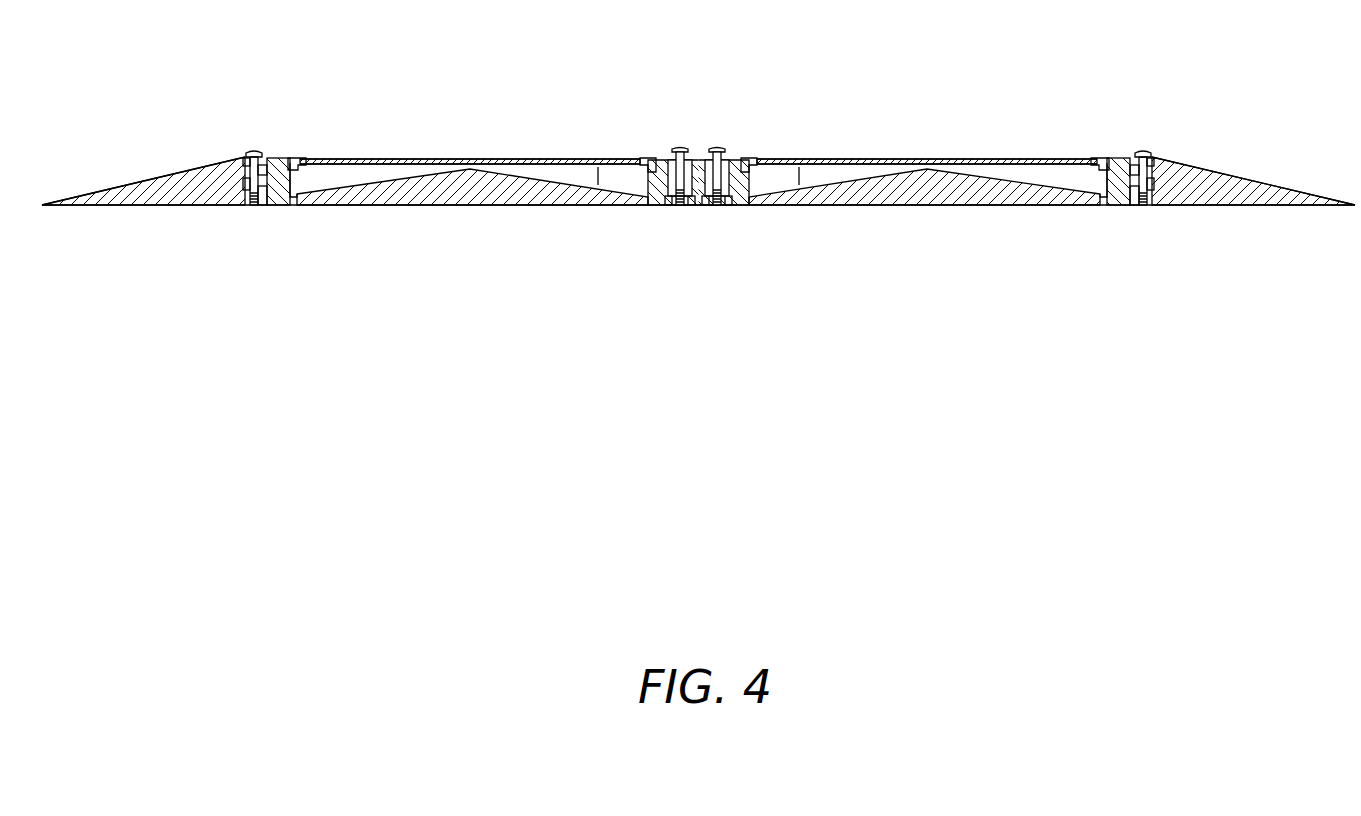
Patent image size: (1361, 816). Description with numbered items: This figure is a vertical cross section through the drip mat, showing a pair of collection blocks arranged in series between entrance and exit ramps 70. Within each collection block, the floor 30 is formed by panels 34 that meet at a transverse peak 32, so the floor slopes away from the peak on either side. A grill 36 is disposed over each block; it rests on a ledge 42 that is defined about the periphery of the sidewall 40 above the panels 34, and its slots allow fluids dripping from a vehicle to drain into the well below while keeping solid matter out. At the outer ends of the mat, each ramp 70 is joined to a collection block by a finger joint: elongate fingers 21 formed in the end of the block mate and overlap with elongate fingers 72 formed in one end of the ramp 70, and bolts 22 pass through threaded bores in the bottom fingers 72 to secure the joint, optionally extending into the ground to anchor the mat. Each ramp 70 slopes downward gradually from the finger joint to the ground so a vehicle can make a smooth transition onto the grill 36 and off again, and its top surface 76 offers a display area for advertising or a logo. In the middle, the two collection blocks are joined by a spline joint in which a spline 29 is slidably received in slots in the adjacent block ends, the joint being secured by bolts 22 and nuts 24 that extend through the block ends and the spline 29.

The elongate fingers 21 is at (232, 152).
The bolts 22 is at (257, 150).
The nuts 24 is at (678, 207).
The spline 29 is at (695, 207).
The floor 30 is at (512, 207).
The transverse peak 32 is at (476, 158).
The panels 34 is at (412, 152).
The grill 36 is at (565, 158).
The sidewall 40 is at (307, 150).
The ledge 42 is at (298, 150).
The ramps 70 is at (163, 207).
The elongate fingers 72 is at (265, 207).
The top surface 76 is at (140, 172).